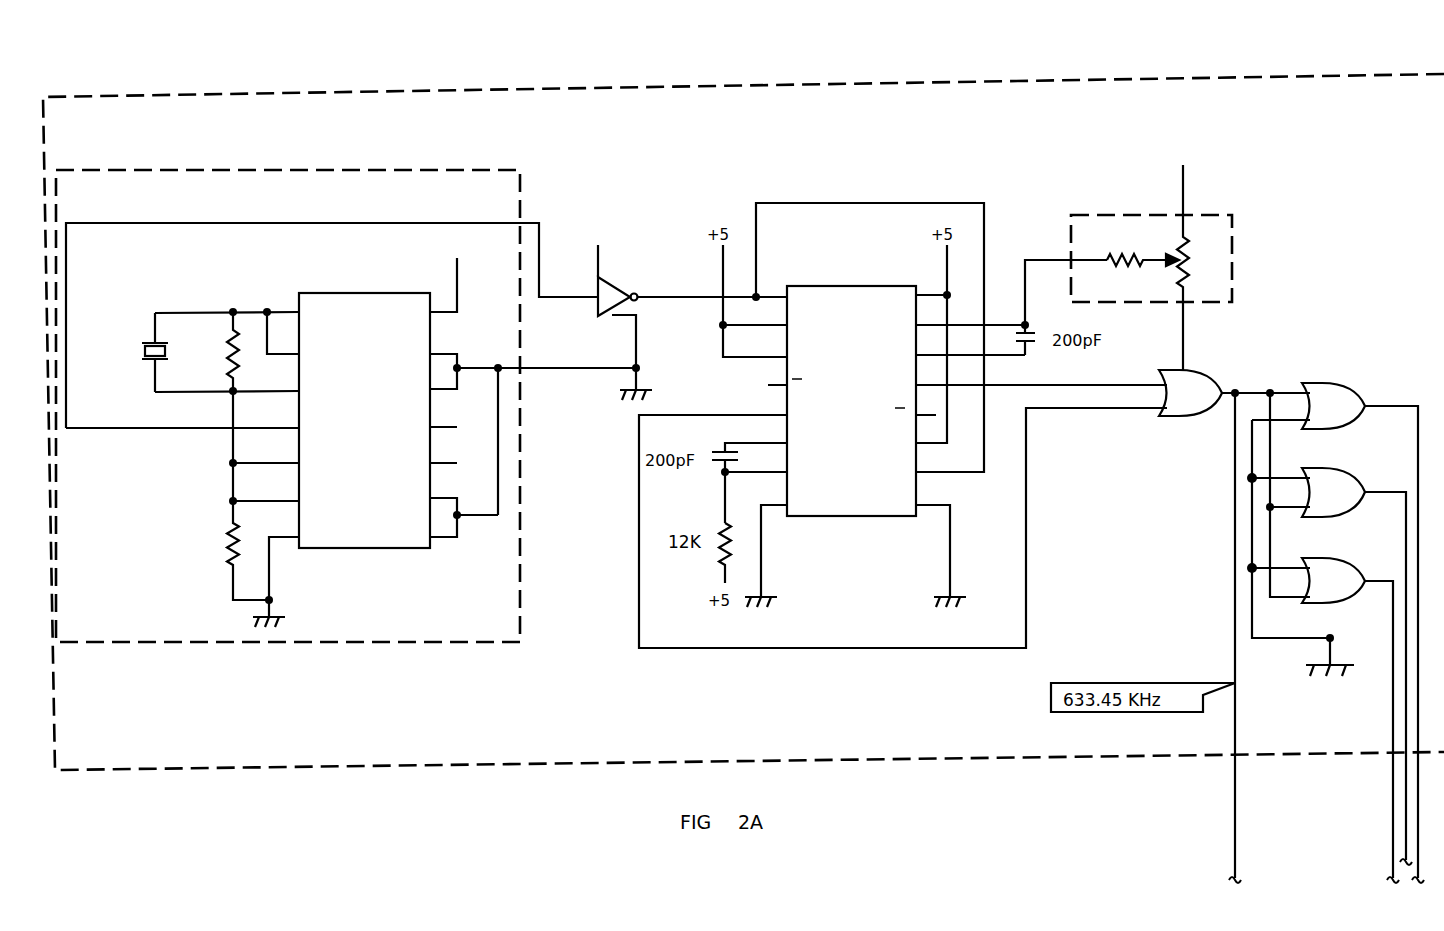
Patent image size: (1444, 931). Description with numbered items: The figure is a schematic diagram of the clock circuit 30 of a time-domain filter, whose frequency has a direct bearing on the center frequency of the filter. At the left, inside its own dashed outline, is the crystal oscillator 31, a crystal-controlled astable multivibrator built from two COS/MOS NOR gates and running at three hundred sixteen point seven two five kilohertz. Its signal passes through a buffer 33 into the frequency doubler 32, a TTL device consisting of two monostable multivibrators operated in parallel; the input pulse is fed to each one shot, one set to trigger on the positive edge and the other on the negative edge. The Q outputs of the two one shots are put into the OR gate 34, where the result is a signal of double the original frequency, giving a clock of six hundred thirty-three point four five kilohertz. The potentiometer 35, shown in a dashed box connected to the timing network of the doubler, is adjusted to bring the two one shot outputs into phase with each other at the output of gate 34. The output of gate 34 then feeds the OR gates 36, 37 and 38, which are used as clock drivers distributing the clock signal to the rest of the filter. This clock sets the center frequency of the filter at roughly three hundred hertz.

The clock circuit 30 is at (877, 84).
The crystal oscillator 31 is at (455, 168).
The frequency doubler 32 is at (860, 517).
The buffer 33 is at (610, 282).
The gate 34 is at (1185, 372).
The potentiometer 35 is at (1190, 215).
The OR gate 36 is at (1330, 383).
The OR gate 37 is at (1340, 468).
The OR gate 38 is at (1340, 558).